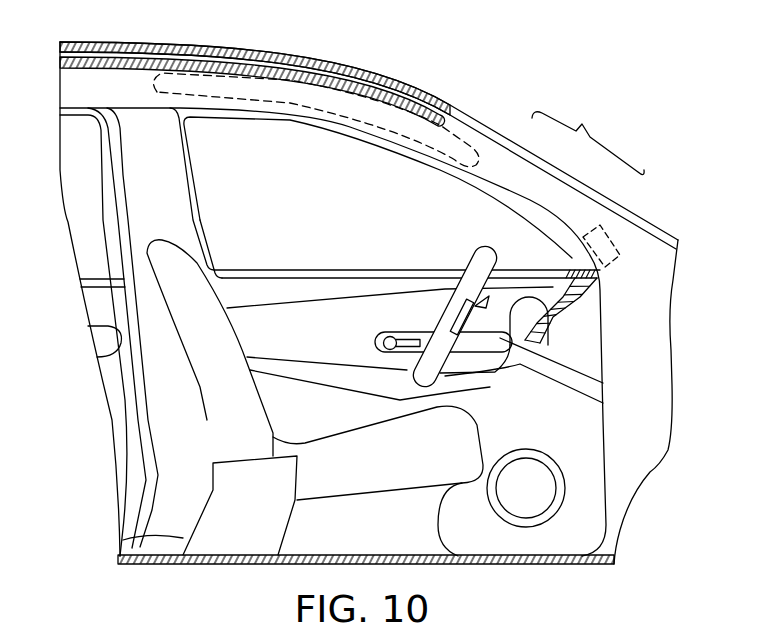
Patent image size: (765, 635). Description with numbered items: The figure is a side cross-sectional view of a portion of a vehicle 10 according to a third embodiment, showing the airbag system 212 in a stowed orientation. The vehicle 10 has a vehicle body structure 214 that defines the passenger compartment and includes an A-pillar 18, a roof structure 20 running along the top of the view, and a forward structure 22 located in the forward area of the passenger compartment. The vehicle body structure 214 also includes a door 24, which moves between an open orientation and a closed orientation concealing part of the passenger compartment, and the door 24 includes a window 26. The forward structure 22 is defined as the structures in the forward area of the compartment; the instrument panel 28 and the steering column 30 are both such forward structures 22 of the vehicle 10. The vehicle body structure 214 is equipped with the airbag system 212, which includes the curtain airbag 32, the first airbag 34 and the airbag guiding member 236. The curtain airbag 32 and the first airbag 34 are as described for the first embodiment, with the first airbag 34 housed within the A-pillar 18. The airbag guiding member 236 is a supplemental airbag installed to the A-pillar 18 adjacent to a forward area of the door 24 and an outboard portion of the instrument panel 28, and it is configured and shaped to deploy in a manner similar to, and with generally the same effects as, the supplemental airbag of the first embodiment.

The vehicle 10 is at (519, 101).
The A-pillar 18 is at (466, 137).
The roof structure 20 is at (227, 63).
The forward structure 22 is at (603, 357).
The door 24 is at (335, 320).
The window 26 is at (300, 183).
The instrument panel 28 is at (513, 346).
The steering column 30 is at (482, 262).
The curtain airbag 32 is at (490, 150).
The first airbag 34 is at (482, 297).
The airbag system 212 is at (588, 138).
The vehicle body structure 214 is at (362, 64).
The airbag guiding member 236 is at (604, 243).